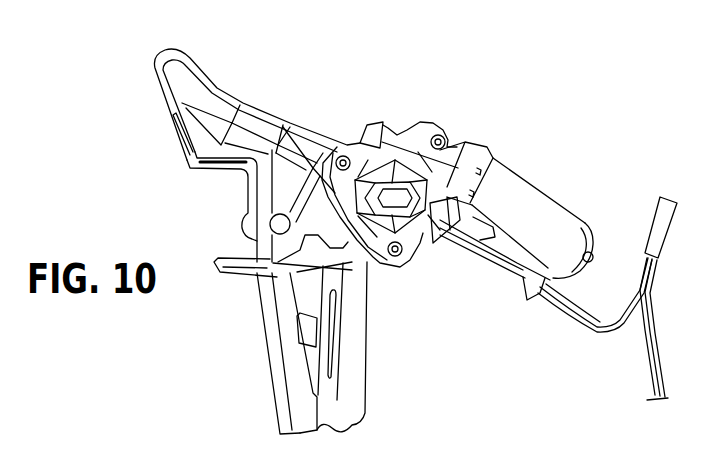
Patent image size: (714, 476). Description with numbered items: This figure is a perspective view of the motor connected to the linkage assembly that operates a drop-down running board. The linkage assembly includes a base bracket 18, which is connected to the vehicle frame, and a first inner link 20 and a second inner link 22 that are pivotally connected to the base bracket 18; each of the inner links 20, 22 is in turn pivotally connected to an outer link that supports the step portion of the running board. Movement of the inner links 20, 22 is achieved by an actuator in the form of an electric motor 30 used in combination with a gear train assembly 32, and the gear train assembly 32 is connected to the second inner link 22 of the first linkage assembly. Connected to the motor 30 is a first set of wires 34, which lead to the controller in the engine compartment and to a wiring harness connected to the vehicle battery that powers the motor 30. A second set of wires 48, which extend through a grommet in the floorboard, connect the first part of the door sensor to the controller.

The base bracket 18 is at (191, 74).
The first inner link 20 is at (287, 330).
The second inner link 22 is at (364, 322).
The electric motor 30 is at (542, 201).
The gear train assembly 32 is at (410, 124).
The first set of wires 34 is at (592, 330).
The second set of wires 48 is at (645, 360).